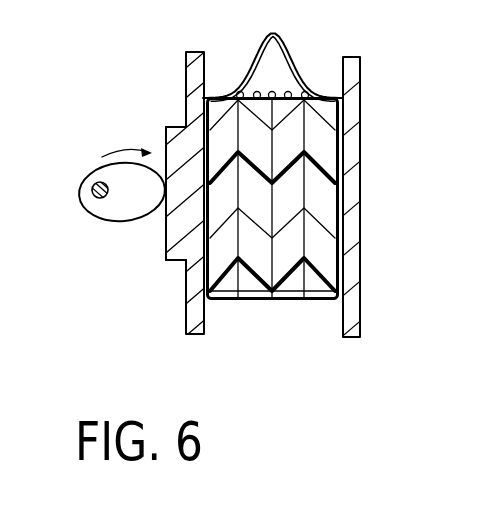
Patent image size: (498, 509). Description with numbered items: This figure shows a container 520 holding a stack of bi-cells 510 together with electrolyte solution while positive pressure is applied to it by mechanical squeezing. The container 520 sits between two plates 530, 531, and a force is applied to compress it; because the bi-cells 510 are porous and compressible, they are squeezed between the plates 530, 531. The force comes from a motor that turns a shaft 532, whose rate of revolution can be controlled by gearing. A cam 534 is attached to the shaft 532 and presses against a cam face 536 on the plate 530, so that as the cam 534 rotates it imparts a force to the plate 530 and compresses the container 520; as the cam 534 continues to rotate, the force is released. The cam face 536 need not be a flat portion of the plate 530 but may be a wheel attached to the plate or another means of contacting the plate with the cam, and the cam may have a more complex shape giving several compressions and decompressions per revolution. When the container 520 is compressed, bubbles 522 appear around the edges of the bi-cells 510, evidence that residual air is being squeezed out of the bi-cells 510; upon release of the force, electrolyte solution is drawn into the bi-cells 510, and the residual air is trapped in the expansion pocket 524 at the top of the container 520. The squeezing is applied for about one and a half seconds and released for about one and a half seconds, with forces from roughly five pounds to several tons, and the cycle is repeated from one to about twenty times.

The bi-cells 510 is at (247, 296).
The container 520 is at (262, 43).
The bubbles 522 is at (293, 103).
The expansion pocket 524 is at (283, 70).
The plate 530 is at (180, 322).
The plate 531 is at (352, 342).
The shaft 532 is at (90, 197).
The cam 534 is at (112, 175).
The cam face 536 is at (157, 252).